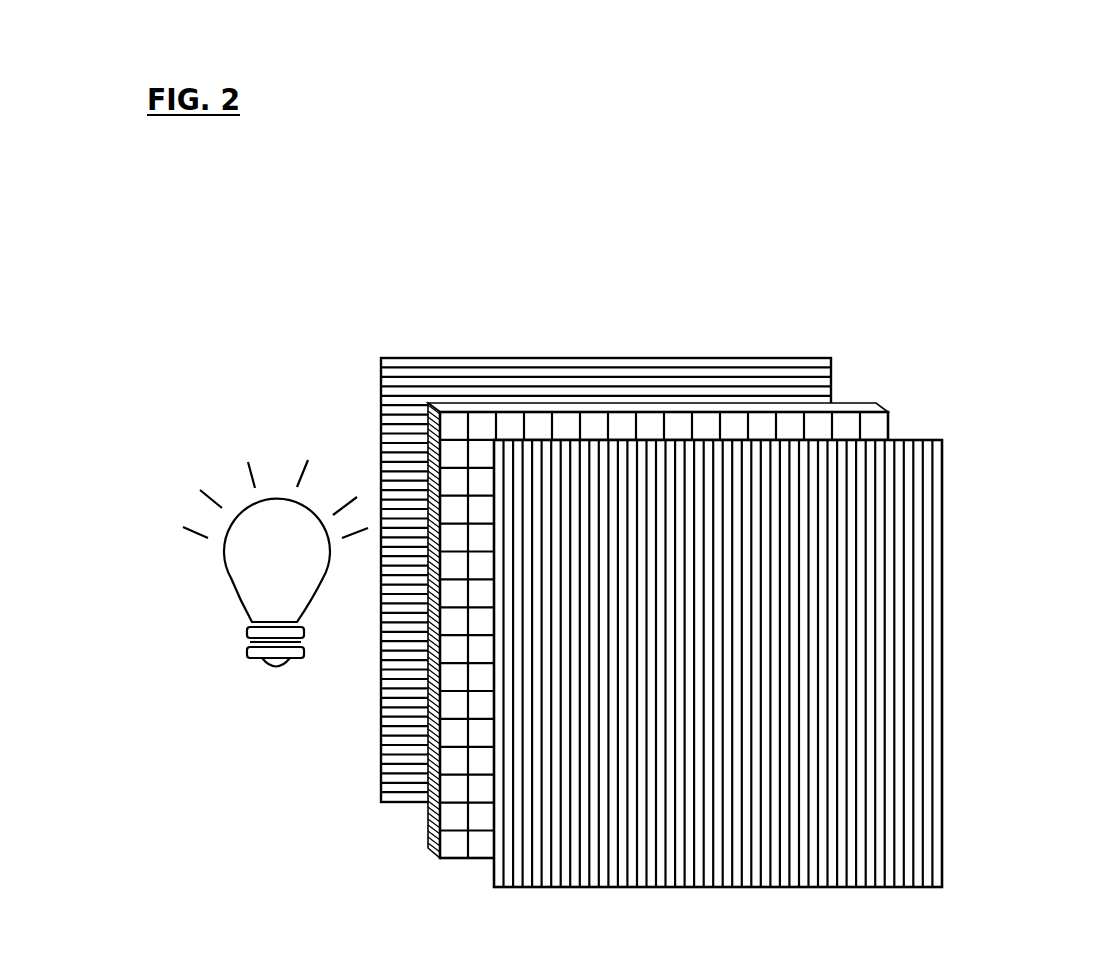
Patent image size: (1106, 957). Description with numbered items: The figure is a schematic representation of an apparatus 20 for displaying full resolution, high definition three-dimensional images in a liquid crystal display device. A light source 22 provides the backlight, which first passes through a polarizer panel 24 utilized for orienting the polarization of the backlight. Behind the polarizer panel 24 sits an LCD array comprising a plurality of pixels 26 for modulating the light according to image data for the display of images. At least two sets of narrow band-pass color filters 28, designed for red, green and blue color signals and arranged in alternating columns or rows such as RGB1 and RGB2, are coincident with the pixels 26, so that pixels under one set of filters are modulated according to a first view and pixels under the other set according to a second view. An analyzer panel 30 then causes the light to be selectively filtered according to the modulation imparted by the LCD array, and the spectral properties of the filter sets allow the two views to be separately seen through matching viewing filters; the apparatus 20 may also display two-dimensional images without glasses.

The apparatus 20 is at (709, 110).
The light source 22 is at (248, 602).
The polarizer panel 24 is at (670, 357).
The pixels 26 is at (848, 404).
The narrow band-pass color filters 28 is at (880, 426).
The analyzer panel 30 is at (943, 547).